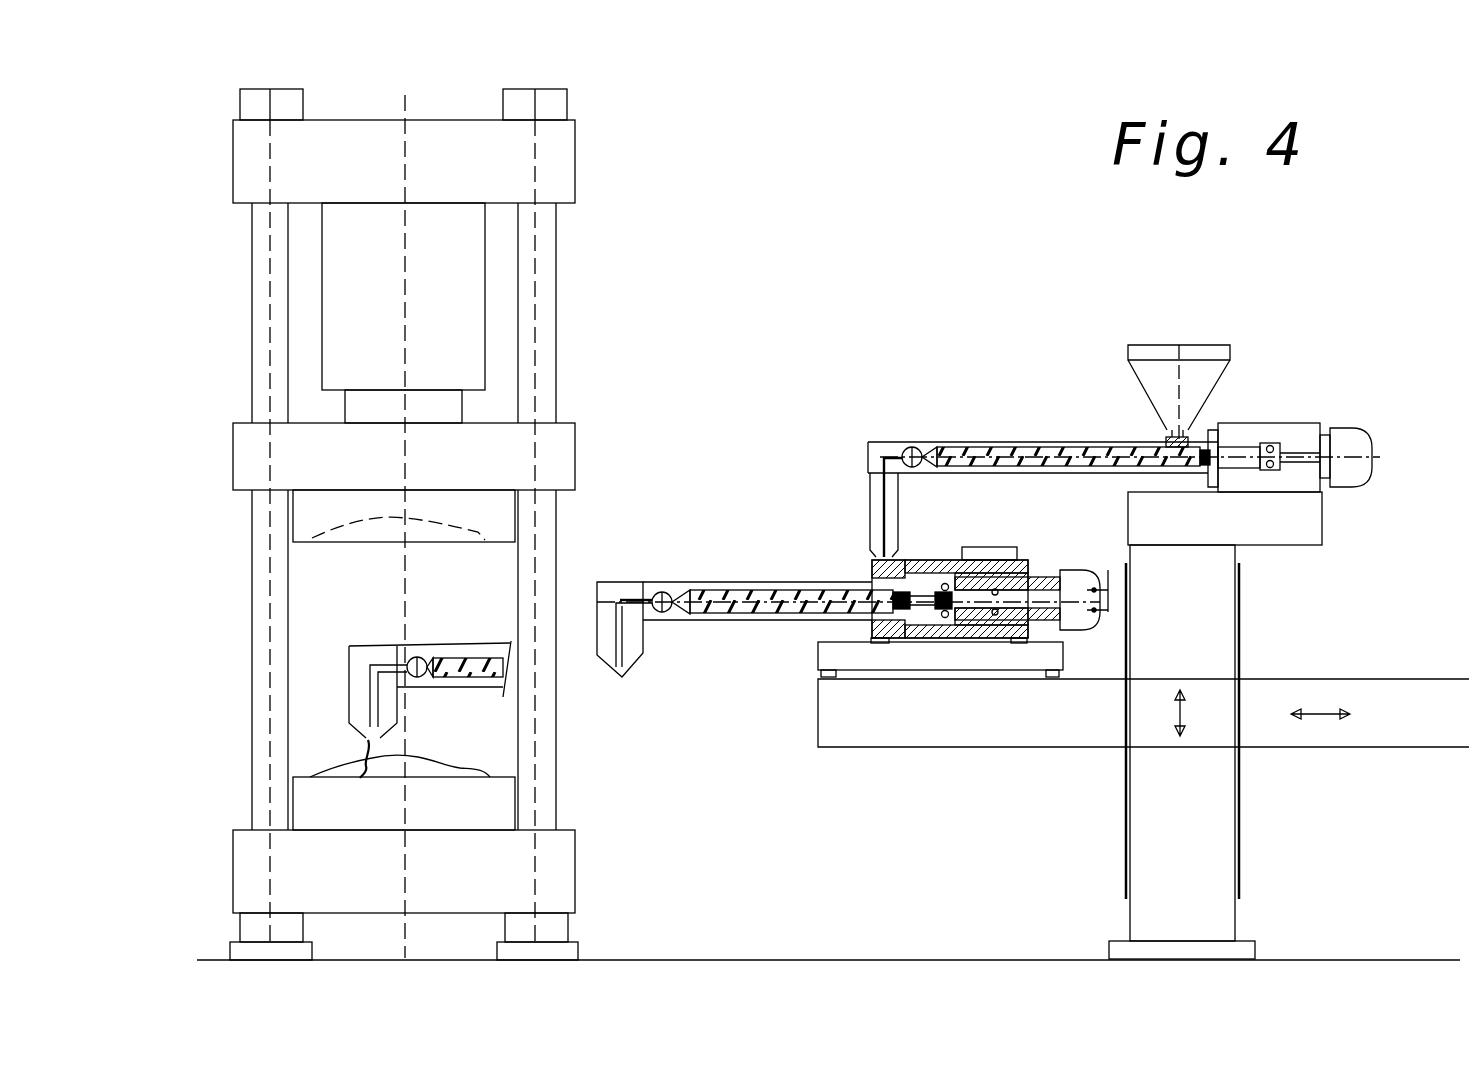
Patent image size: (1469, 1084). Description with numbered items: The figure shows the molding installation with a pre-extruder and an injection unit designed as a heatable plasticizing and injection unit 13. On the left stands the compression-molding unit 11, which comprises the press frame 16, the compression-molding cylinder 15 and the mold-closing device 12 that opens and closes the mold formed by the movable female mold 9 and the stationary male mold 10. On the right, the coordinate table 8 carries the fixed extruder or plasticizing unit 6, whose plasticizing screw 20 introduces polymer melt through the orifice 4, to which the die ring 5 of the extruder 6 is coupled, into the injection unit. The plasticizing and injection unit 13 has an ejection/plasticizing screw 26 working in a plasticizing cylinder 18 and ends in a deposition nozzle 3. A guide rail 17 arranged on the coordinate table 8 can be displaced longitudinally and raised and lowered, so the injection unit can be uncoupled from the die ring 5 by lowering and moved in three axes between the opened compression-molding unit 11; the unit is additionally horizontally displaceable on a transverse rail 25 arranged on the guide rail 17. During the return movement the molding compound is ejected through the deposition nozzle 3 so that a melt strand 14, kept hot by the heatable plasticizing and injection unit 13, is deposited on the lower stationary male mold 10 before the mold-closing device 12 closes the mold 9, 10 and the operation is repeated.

The deposition nozzle 3 is at (638, 648).
The orifice 4 is at (875, 567).
The die ring 5 is at (876, 495).
The extruder (plasticizing unit) 6 is at (945, 432).
The coordinate table 8 is at (1211, 813).
The movable female mold 9 is at (322, 493).
The stationary male mold 10 is at (322, 783).
The compression-molding unit 11 is at (636, 189).
The mold-closing device 12 is at (555, 440).
The plasticizing and injection unit 13 is at (735, 650).
The melt strand 14 is at (362, 740).
The compression-molding cylinder 15 is at (448, 316).
The press frame 16 is at (266, 246).
The guide rail 17 is at (1289, 731).
The plasticizing cylinder 18 is at (663, 622).
The plasticizing screw 20 is at (1038, 455).
The transverse rail 25 is at (964, 657).
The ejection/plasticizing screw 26 is at (825, 607).